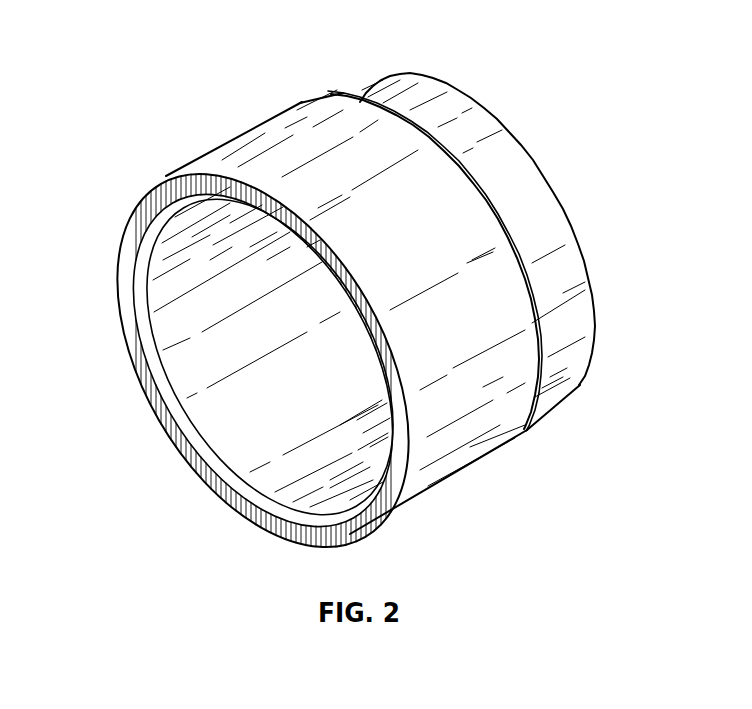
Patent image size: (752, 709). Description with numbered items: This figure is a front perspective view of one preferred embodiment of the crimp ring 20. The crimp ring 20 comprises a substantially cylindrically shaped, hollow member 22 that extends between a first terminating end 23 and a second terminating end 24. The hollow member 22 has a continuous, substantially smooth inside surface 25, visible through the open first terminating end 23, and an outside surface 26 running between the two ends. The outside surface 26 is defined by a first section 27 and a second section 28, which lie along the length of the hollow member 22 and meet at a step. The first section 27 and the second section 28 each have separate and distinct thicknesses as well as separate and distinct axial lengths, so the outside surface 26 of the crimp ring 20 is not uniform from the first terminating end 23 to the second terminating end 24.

The crimp ring 20 is at (355, 313).
The hollow member 22 is at (571, 269).
The first terminating end 23 is at (243, 505).
The second terminating end 24 is at (471, 94).
The inside surface 25 is at (190, 368).
The outside surface 26 is at (259, 136).
The first section 27 is at (493, 423).
The second section 28 is at (517, 168).